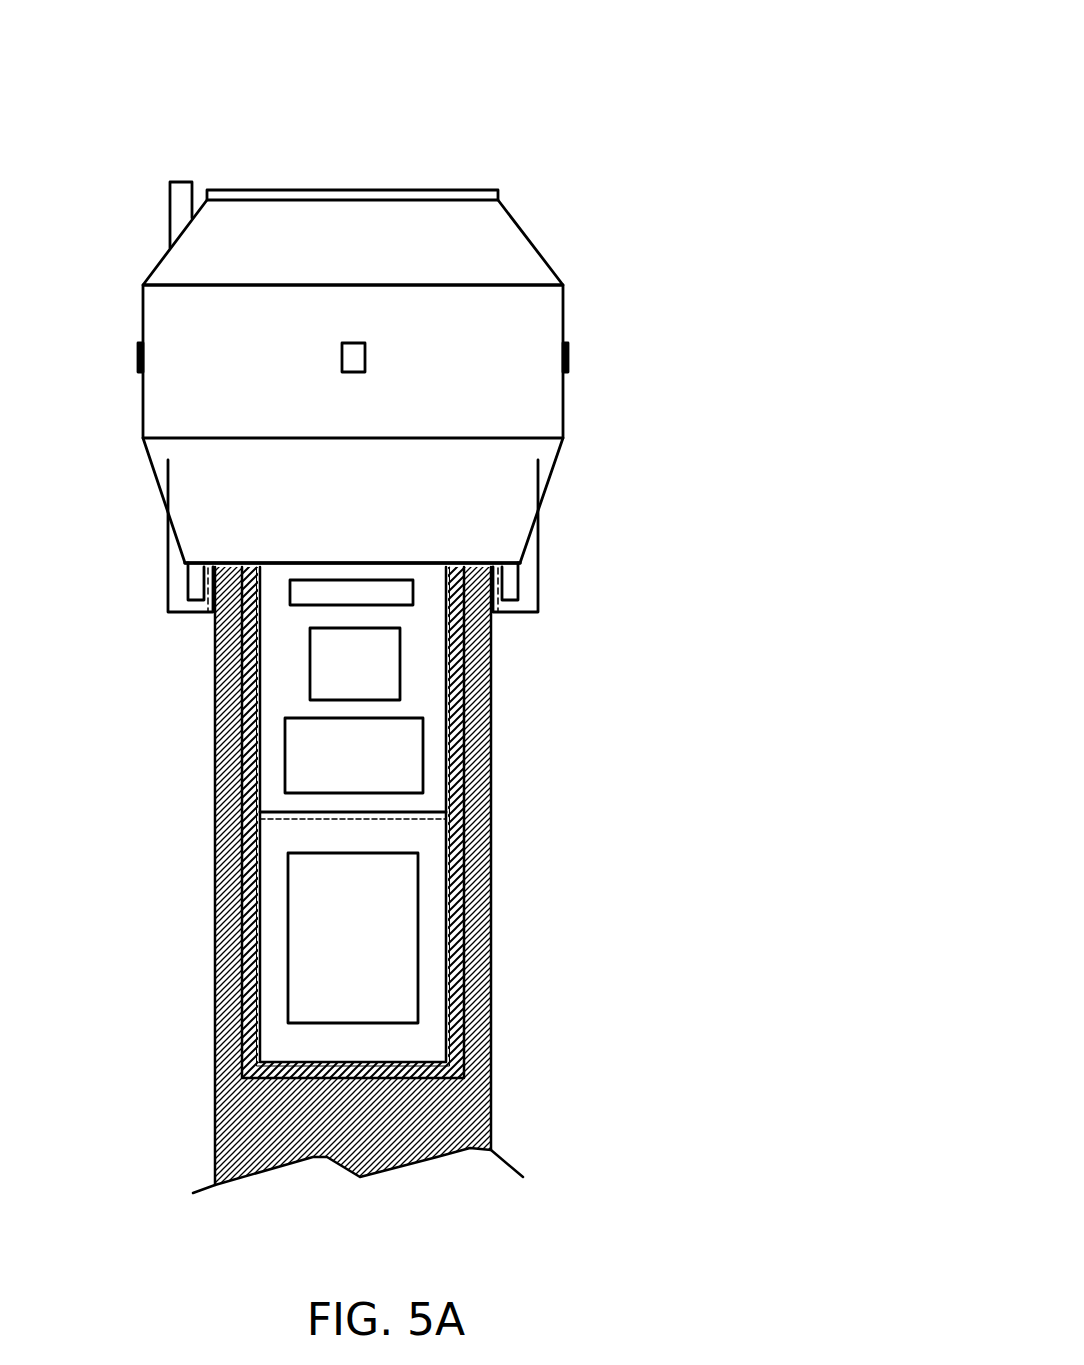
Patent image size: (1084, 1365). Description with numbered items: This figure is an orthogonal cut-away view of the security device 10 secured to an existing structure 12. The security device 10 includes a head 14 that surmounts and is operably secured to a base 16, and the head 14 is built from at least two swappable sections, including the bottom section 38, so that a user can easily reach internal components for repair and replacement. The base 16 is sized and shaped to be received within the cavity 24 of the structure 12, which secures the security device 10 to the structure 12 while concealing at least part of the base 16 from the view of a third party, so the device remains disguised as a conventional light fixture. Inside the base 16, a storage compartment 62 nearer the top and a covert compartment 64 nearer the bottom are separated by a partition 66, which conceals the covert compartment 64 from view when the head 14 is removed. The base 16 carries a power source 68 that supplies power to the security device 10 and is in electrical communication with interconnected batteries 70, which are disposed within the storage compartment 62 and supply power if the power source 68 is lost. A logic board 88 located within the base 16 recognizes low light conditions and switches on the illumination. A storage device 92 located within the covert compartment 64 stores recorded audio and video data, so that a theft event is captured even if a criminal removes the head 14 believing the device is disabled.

The security device 10 is at (806, 97).
The structure 12 is at (487, 1093).
The head 14 is at (477, 394).
The base 16 is at (467, 638).
The cavity 24 is at (455, 720).
The bottom section 38 is at (403, 448).
The storage compartment 62 is at (232, 643).
The covert compartment 64 is at (274, 938).
The partition 66 is at (280, 807).
The power source 68 is at (355, 664).
The interconnected batteries 70 is at (354, 755).
The logic board 88 is at (302, 597).
The storage device 92 is at (353, 938).